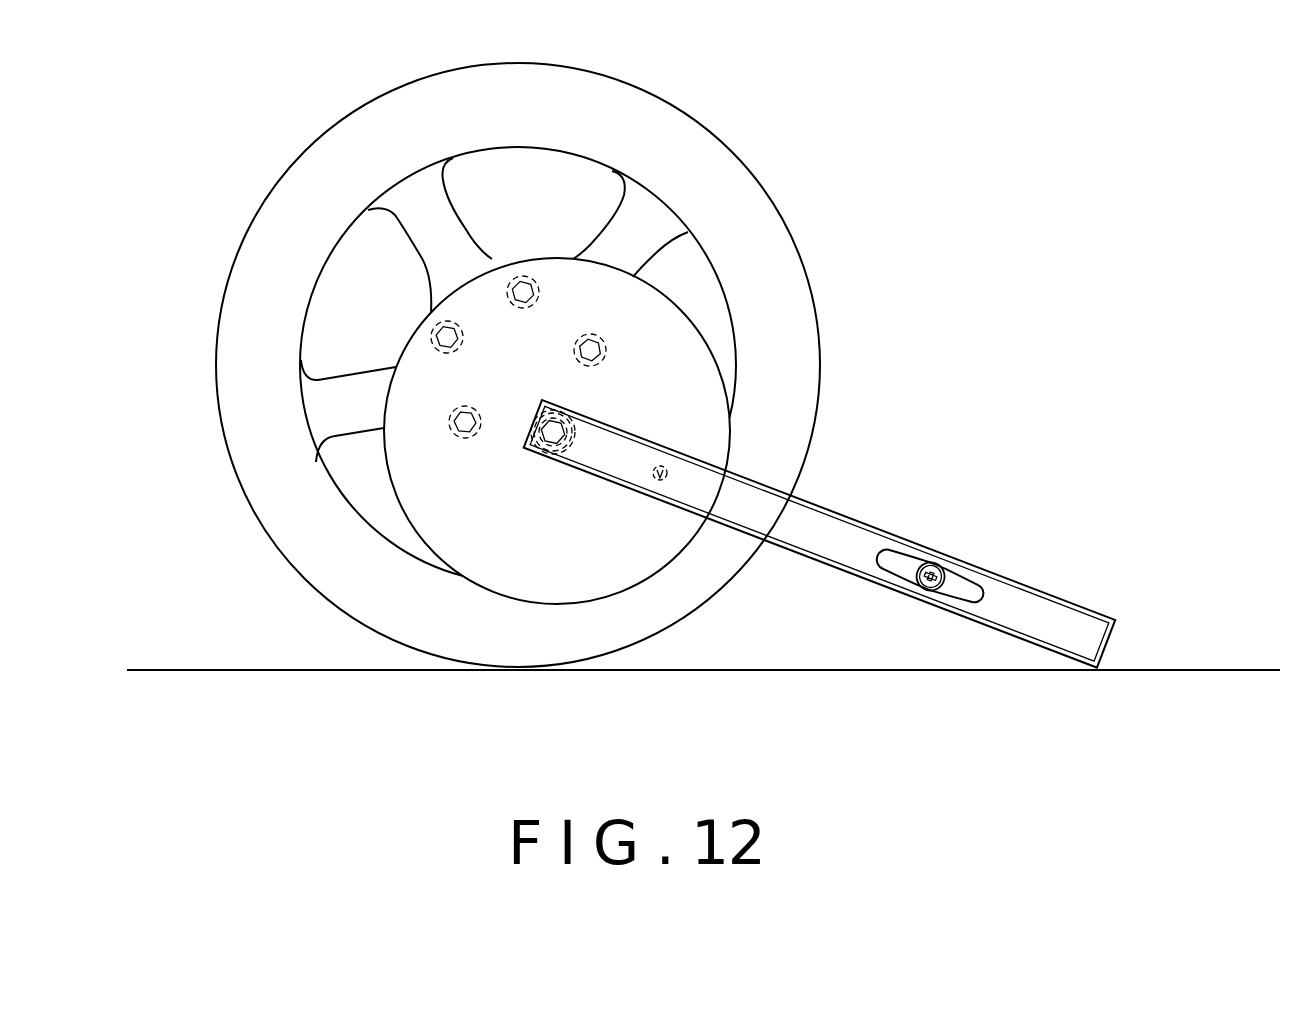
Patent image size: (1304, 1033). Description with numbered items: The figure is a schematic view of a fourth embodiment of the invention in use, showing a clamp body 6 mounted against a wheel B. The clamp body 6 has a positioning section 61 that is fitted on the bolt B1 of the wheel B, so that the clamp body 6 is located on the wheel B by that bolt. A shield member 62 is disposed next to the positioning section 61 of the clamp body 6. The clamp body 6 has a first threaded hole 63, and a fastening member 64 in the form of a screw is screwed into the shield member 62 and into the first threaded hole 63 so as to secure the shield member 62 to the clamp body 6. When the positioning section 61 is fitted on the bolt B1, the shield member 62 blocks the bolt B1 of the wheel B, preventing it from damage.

The wheel B is at (743, 203).
The bolt B1 is at (527, 290).
The shield member 62 is at (697, 398).
The first threaded hole 63 is at (668, 472).
The fastening member 64 is at (659, 482).
The clamp body 6 is at (876, 542).
The positioning section 61 is at (547, 452).